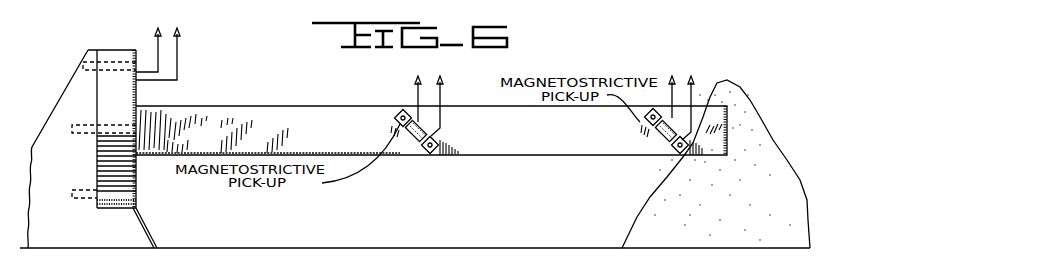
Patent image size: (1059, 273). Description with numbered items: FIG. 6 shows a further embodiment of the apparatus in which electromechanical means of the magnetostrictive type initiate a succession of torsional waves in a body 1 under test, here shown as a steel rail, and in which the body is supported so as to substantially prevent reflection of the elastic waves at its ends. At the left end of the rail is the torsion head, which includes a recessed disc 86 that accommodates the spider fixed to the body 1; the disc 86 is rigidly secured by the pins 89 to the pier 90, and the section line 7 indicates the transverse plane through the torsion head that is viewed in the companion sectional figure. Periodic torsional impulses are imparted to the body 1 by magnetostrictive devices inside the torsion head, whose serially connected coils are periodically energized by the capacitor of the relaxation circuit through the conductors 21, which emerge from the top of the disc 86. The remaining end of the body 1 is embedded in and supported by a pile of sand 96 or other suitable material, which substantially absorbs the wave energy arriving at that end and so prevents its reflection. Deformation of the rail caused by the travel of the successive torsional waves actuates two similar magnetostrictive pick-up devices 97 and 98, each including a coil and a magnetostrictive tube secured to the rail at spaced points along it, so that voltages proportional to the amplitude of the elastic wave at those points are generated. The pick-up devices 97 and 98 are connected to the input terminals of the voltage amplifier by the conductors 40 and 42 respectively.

The body 1 is at (316, 116).
The section line 7- 7 is at (101, 252).
The conductors 21 is at (160, 62).
The conductors 40 is at (418, 76).
The conductors 42 is at (672, 76).
The disc 86 is at (136, 92).
The pins 89 is at (80, 125).
The pier 90 is at (68, 95).
The pile of sand 96 is at (757, 108).
The magnetostrictive device 97 is at (405, 145).
The magnetostrictive device 98 is at (657, 155).